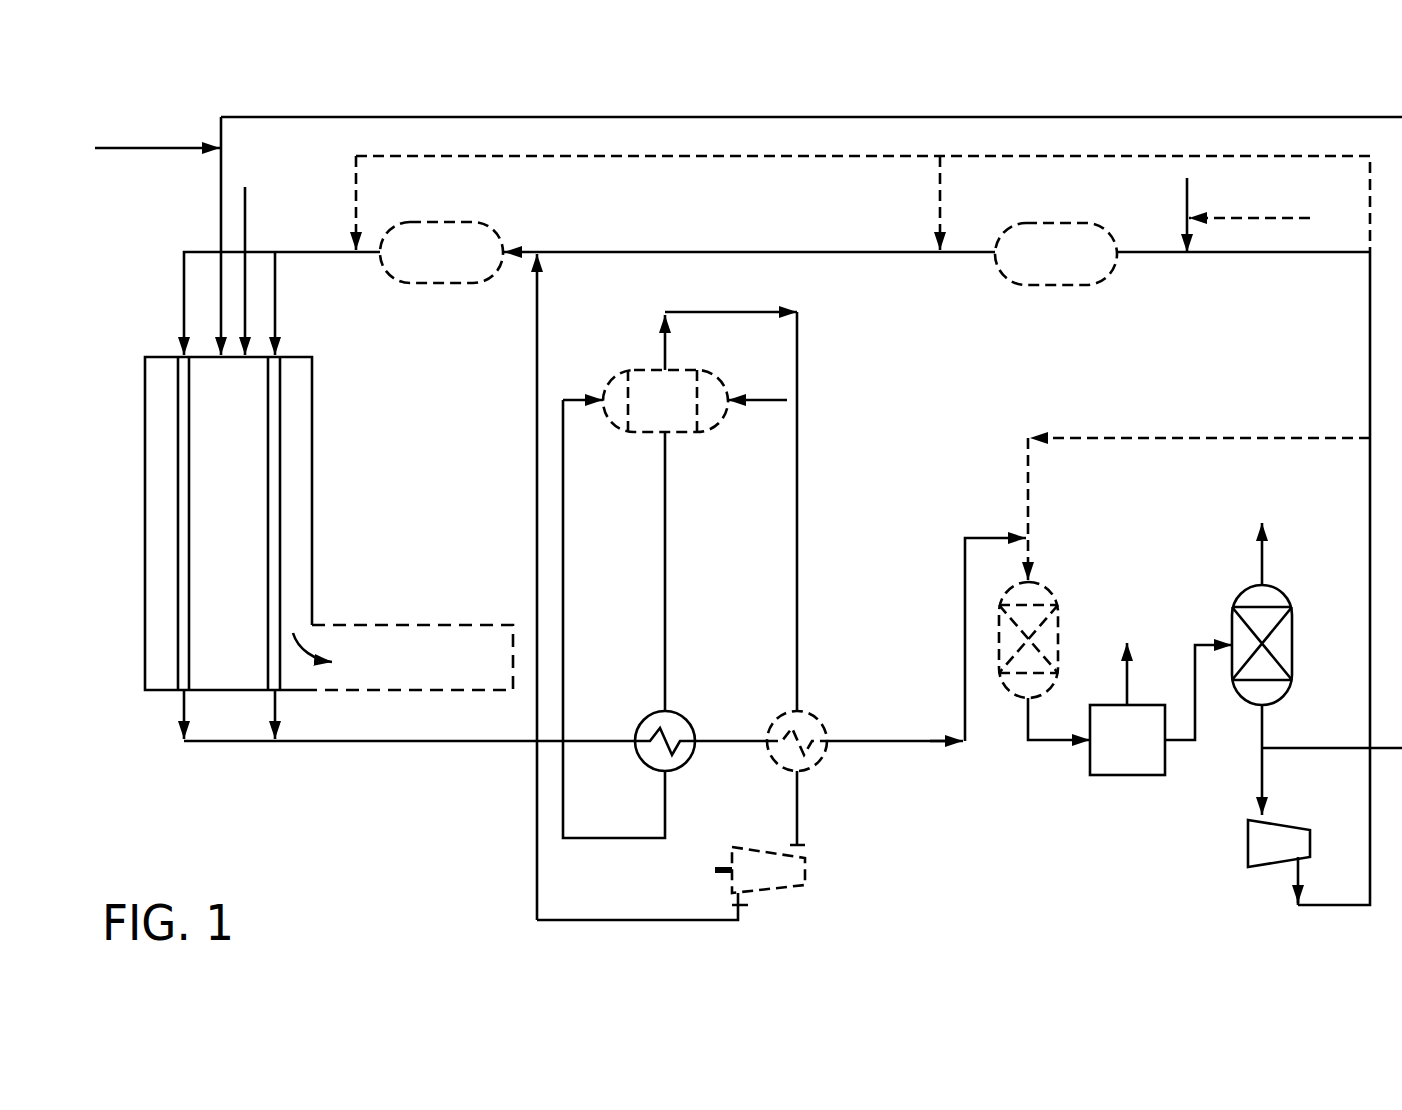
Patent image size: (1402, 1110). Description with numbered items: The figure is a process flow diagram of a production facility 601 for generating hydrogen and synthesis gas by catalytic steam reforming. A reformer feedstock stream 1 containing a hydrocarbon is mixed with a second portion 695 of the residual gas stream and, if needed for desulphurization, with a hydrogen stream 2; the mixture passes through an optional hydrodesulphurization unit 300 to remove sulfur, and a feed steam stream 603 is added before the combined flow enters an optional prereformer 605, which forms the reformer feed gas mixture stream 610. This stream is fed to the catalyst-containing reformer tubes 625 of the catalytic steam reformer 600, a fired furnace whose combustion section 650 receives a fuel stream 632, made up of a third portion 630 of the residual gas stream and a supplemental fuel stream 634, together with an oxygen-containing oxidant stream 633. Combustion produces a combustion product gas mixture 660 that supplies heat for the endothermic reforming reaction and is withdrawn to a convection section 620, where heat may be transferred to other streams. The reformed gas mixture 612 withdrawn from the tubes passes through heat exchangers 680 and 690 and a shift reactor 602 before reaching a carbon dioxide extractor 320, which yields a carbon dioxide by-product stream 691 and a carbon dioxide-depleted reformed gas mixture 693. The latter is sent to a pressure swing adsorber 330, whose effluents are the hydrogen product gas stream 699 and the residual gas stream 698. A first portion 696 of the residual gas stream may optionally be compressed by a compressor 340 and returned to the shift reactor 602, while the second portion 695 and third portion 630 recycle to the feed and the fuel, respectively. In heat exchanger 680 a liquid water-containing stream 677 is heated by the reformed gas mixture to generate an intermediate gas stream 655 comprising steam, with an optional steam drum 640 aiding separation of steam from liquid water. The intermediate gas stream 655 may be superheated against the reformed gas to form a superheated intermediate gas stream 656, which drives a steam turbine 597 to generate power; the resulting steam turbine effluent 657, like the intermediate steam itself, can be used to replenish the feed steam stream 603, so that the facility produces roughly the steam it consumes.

The reformer feedstock stream 1 is at (1187, 195).
The H2 stream 2 is at (1265, 218).
The hydrodesulphurization unit 300 is at (1068, 223).
The CO2 extractor 320 is at (1134, 775).
The pressure swing adsorber 330 is at (1278, 592).
The compressor 340 is at (1248, 848).
The steam turbine 597 is at (778, 888).
The catalytic steam reformer 600 is at (232, 523).
The production facility 601 is at (372, 835).
The shift reactor 602 is at (1052, 590).
The feed steam stream 603 is at (537, 312).
The prereformer 605 is at (435, 222).
The reformer feed gas mixture stream 610 is at (305, 254).
The reformed gas mixture 612 is at (400, 741).
The convection section 620 is at (412, 657).
The catalyst-containing reformer tubes 625 is at (178, 500).
The third portion of the residual gas stream 630 is at (812, 117).
The fuel stream 632 is at (221, 214).
The oxidant stream 633 is at (245, 215).
The supplemental fuel stream 634 is at (185, 148).
The steam drum 640 is at (652, 370).
The combustion section 650 is at (226, 508).
The intermediate gas stream 655 is at (797, 348).
The superheated intermediate gas stream 656 is at (797, 810).
The steam turbine effluent 657 is at (628, 920).
The combustion product gas mixture 660 is at (315, 640).
The liquid water-containing stream 677 is at (665, 577).
The heat exchanger 680 is at (675, 712).
The heat exchanger 690 is at (822, 715).
The CO2 by-product stream 691 is at (1127, 672).
The CO2-depleted reformed gas mixture 693 is at (1177, 740).
The second portion of the residual gas stream 695 is at (1370, 318).
The first portion of the residual gas stream 696 is at (1285, 438).
The residual gas stream 698 is at (1270, 727).
The H2 product gas stream 699 is at (1270, 548).